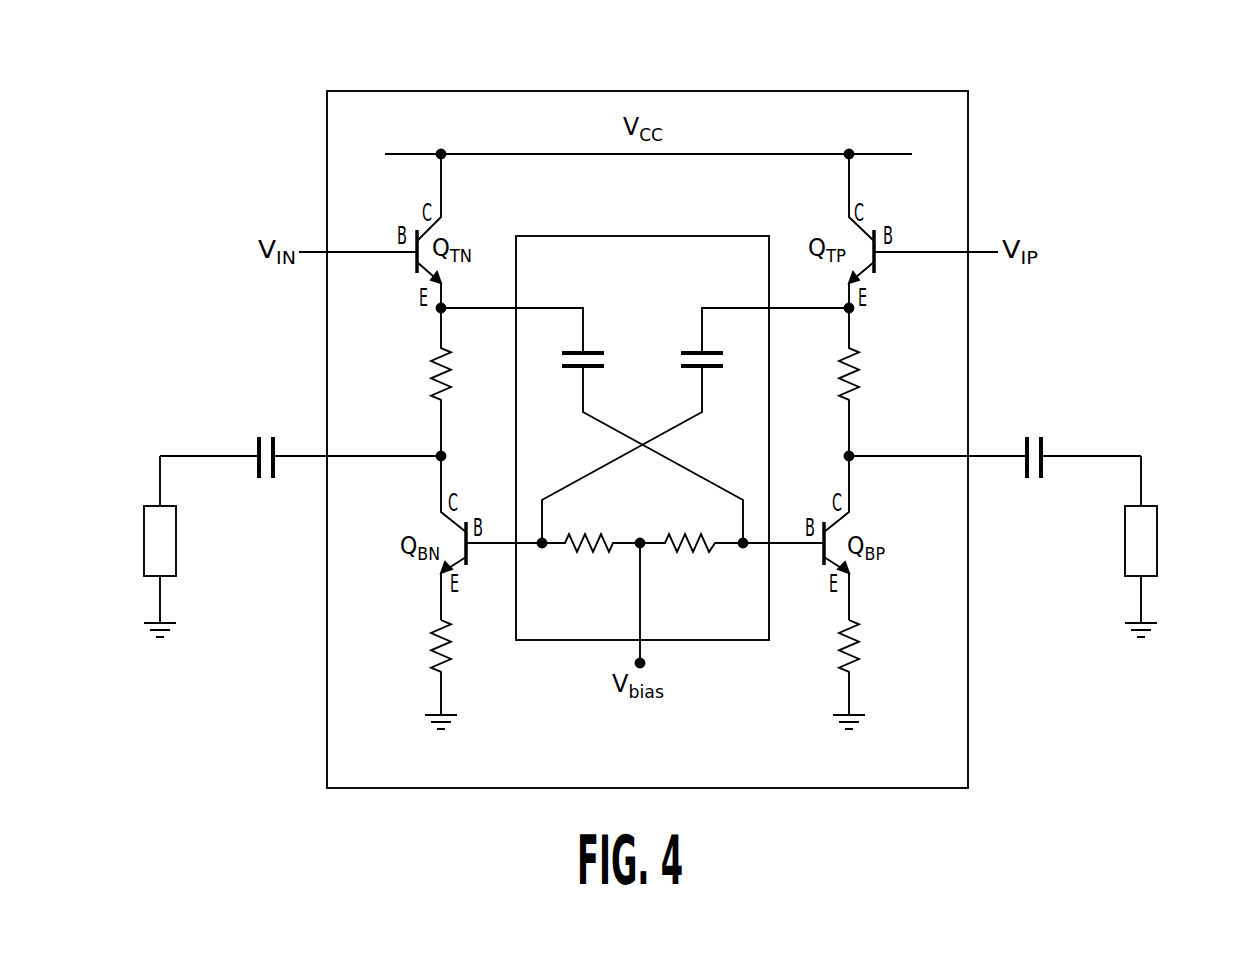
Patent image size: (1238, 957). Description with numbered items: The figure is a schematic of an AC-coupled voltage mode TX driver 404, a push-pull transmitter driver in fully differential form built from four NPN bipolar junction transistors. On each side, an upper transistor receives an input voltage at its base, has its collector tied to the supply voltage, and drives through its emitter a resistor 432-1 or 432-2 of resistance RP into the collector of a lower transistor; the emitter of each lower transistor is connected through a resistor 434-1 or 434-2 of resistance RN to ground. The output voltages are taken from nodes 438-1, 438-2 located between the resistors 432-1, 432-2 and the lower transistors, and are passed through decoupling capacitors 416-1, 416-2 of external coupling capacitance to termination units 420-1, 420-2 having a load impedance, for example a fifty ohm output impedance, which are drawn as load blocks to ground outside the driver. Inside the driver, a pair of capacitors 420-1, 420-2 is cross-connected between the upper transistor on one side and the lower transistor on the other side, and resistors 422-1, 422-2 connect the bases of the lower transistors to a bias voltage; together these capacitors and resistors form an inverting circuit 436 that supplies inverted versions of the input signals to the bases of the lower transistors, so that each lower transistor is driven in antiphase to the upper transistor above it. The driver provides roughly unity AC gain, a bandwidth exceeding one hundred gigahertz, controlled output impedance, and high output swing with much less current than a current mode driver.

The AC-coupled voltage mode TX driver 404 is at (867, 91).
The inverting circuit 436 is at (670, 236).
The decoupling capacitor 416-1 is at (257, 448).
The decoupling capacitor 416-2 is at (1048, 448).
The termination unit / capacitor 420-1 is at (176, 544).
The termination unit / capacitor 420-2 is at (1125, 545).
The resistor 422-1 is at (592, 550).
The resistor 422-2 is at (697, 553).
The resistor 432-1 is at (432, 378).
The resistor 432-2 is at (858, 370).
The resistor 434-1 is at (433, 648).
The resistor 434-2 is at (840, 650).
The node 438-1 is at (437, 462).
The node 438-2 is at (853, 463).